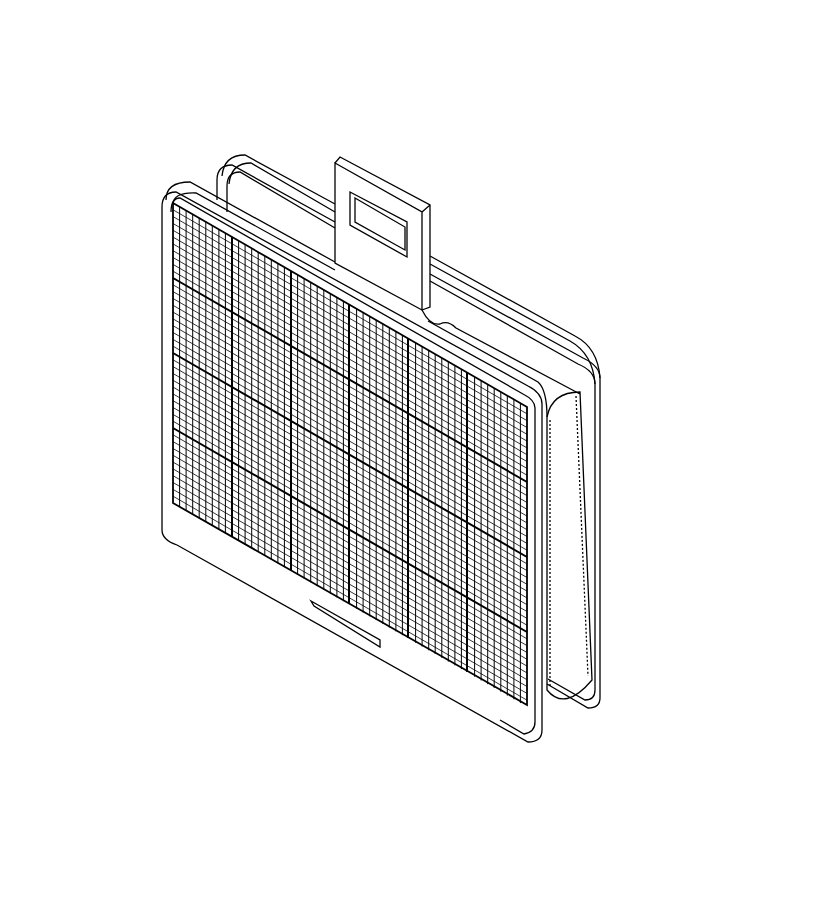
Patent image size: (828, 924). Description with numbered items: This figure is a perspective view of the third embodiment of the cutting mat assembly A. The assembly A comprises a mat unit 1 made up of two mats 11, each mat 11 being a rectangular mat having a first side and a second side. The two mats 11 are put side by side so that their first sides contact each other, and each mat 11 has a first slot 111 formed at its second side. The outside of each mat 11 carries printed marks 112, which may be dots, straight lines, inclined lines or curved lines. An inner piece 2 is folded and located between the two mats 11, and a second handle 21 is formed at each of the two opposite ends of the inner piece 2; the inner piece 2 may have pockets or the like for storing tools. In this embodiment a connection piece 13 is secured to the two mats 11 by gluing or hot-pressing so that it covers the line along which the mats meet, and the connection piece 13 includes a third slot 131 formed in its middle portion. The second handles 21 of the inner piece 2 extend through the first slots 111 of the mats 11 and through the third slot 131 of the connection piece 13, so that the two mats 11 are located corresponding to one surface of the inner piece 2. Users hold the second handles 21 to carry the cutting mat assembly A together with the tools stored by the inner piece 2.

The cutting mat assembly A is at (163, 92).
The mat unit 1 is at (279, 160).
The mat 11 is at (160, 330).
The first slot 111 is at (340, 623).
The printed marks 112 is at (172, 445).
The connection piece 13 is at (194, 181).
The third slot 131 is at (432, 318).
The inner piece 2 is at (612, 516).
The second handle 21 is at (387, 183).